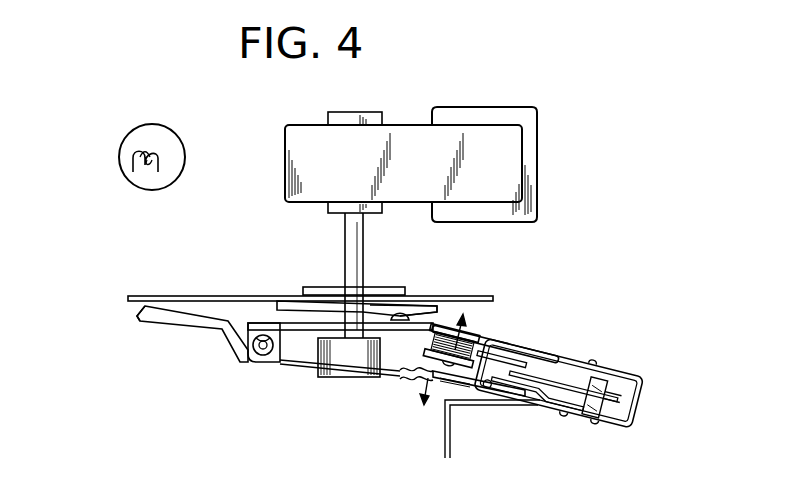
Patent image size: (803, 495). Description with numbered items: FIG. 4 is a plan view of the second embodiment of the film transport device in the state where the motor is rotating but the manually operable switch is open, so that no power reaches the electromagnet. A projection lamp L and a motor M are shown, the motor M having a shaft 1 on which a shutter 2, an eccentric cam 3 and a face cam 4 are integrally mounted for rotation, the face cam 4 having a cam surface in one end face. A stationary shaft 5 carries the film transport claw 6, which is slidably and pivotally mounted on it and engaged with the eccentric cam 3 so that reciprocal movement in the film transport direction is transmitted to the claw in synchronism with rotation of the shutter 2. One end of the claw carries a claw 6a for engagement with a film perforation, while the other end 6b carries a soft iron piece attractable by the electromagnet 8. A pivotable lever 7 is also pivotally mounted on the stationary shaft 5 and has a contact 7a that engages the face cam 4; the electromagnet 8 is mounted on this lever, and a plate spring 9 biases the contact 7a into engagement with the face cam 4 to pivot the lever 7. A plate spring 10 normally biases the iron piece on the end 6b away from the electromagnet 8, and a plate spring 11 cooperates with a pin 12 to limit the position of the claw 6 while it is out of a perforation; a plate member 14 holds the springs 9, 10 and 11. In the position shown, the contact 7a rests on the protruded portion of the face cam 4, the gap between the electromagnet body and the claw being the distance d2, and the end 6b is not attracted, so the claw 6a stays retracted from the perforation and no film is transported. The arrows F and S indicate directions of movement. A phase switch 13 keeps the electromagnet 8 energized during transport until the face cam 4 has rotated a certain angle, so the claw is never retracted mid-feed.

The projection lamp L is at (176, 134).
The motor M is at (512, 157).
The motor shaft 1 is at (345, 240).
The shutter 2 is at (202, 296).
The eccentric cam 3 is at (337, 360).
The face cam 4 is at (424, 307).
The stationary shaft 5 is at (262, 356).
The film transport claw 6 is at (194, 325).
The claw 6a is at (142, 320).
The end of film transport claw 6b is at (430, 372).
The pivotable lever 7 is at (298, 322).
The contact 7a is at (404, 314).
The electromagnet 8 is at (472, 340).
The plate spring 9 is at (549, 355).
The plate spring 10 is at (509, 405).
The plate spring 11 is at (478, 398).
The pin 12 is at (489, 400).
The phase switch 13 is at (600, 385).
The plate member 14 is at (600, 432).
The distance d2 is at (485, 362).
The force direction F is at (467, 324).
The direction S is at (430, 405).